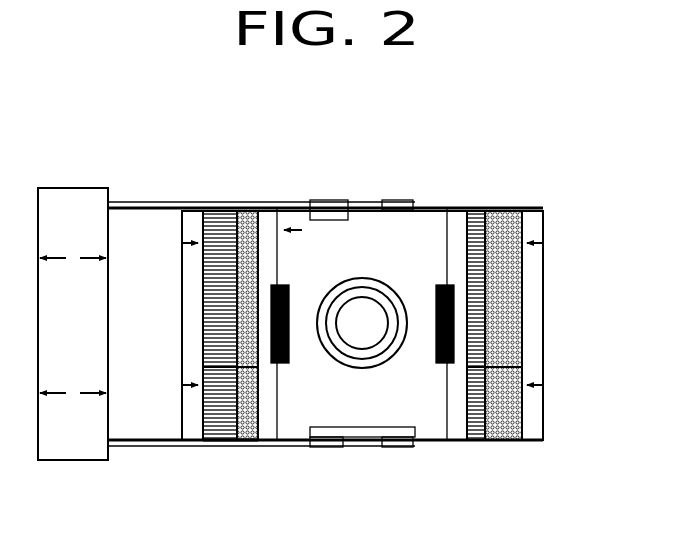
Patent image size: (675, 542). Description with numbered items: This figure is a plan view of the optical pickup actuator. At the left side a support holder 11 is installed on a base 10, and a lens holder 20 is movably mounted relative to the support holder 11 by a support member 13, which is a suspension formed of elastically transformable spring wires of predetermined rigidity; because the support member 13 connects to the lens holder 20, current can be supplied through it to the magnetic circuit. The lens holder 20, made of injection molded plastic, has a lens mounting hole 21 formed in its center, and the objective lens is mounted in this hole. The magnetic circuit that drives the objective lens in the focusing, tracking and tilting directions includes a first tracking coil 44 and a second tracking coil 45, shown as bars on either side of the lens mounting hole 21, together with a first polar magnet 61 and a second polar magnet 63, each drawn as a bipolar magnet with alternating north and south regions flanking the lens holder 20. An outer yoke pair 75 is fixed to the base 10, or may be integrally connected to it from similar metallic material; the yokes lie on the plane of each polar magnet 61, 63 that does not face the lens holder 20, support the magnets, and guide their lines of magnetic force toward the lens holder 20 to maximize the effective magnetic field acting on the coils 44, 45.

The base 10 is at (140, 210).
The support holder 11 is at (63, 447).
The support member 13 is at (238, 447).
The lens holder 20 is at (428, 212).
The lens mounting hole 21 is at (362, 312).
The first tracking coil 44 is at (438, 363).
The second tracking coil 45 is at (289, 363).
The first polar magnet 61 is at (496, 215).
The second polar magnet 63 is at (228, 213).
The outer yoke pair 75 is at (185, 430).